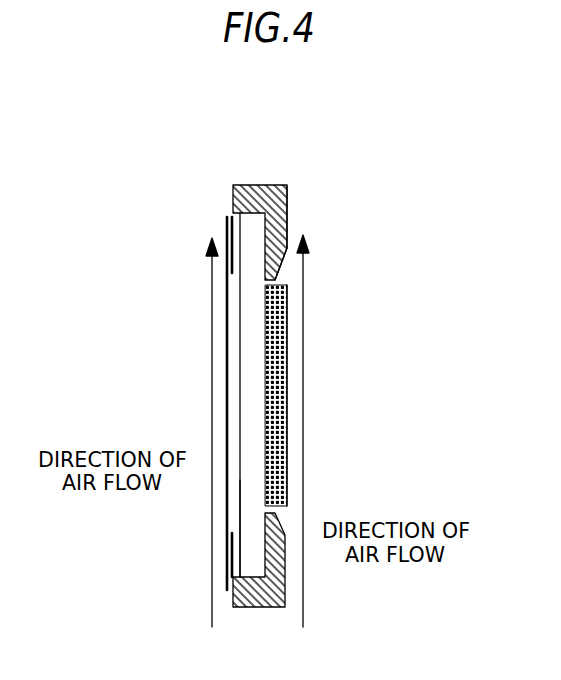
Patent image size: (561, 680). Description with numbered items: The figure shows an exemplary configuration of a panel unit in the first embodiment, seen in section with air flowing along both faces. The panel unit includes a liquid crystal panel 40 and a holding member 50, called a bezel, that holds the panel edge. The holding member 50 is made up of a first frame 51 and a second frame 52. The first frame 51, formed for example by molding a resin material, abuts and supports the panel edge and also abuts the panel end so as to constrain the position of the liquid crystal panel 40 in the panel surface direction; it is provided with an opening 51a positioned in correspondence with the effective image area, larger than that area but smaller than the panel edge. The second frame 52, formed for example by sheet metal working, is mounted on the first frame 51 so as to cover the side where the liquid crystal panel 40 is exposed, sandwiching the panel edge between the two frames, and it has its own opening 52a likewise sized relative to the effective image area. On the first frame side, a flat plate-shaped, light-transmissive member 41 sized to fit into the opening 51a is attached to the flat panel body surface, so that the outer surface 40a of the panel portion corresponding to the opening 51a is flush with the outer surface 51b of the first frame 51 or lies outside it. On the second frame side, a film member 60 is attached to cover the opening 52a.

The liquid crystal panel 40 is at (240, 493).
The outer surface 40a is at (290, 398).
The light-transmissive member 41 is at (280, 430).
The holding member 50 is at (290, 65).
The first frame 51 is at (260, 185).
The opening 51a is at (280, 278).
The outer surface 51b is at (290, 222).
The second frame 52 is at (230, 217).
The opening 52a is at (235, 313).
The film member 60 is at (218, 387).